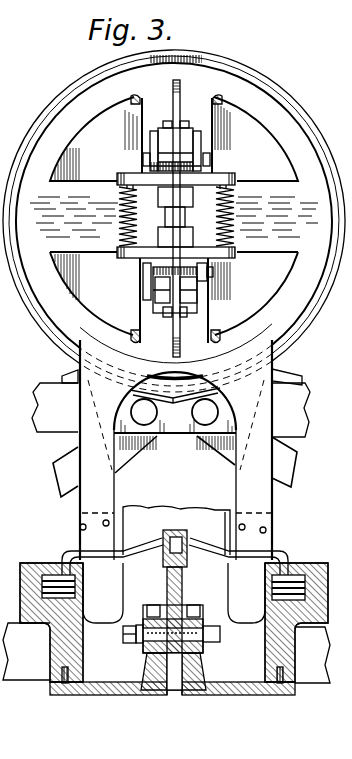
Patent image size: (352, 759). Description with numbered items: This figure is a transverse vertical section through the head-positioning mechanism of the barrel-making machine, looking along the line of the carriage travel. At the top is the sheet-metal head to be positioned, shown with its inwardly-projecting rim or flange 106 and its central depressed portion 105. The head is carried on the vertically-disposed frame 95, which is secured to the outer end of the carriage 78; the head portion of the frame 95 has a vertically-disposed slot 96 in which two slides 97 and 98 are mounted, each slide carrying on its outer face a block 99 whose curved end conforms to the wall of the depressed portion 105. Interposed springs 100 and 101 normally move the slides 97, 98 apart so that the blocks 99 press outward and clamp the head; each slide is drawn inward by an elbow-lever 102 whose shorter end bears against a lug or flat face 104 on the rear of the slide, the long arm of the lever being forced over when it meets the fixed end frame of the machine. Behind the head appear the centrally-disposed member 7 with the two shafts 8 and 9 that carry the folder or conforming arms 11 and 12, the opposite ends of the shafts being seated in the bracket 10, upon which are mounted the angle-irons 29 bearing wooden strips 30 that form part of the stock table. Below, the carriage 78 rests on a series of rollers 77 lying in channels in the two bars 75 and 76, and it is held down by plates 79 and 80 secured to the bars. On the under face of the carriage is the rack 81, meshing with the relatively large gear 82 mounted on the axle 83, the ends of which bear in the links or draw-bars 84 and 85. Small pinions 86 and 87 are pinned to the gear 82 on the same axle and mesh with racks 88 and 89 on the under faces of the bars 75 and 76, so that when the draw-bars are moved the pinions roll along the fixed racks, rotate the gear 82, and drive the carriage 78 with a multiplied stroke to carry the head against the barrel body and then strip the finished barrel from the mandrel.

The centrally-disposed member 7 is at (183, 507).
The shaft 8 is at (196, 437).
The shaft 9 is at (152, 440).
The bracket 10 is at (46, 430).
The folder or conforming arms 11 is at (280, 474).
The conforming arms 12 is at (66, 478).
The angle-irons 29 is at (72, 375).
The wooden strips 30 is at (290, 373).
The bar 75 is at (55, 637).
The bar 76 is at (274, 637).
The rollers 77 is at (77, 582).
The carriage 78 is at (272, 530).
The plate 79 is at (34, 563).
The plate 80 is at (298, 573).
The rack 81 is at (187, 559).
The gear 82 is at (171, 696).
The axle 83 is at (133, 646).
The link or draw-bar 84 is at (136, 621).
The link or draw-bar 85 is at (207, 626).
The pinion 86 is at (150, 608).
The pinion 87 is at (200, 613).
The rack 88 is at (152, 691).
The rack 89 is at (196, 657).
The vertically-disposed frame 95 is at (88, 367).
The vertically-disposed slot 96 is at (160, 311).
The slide 97 is at (196, 131).
The slide 98 is at (212, 284).
The block 99 is at (134, 103).
The spring 100 is at (121, 208).
The spring 101 is at (237, 212).
The elbow-lever 102 is at (172, 333).
The lug or flat face 104 is at (232, 179).
The central depressed portion 105 is at (174, 220).
The inwardly-projecting rim or flange 106 is at (83, 84).